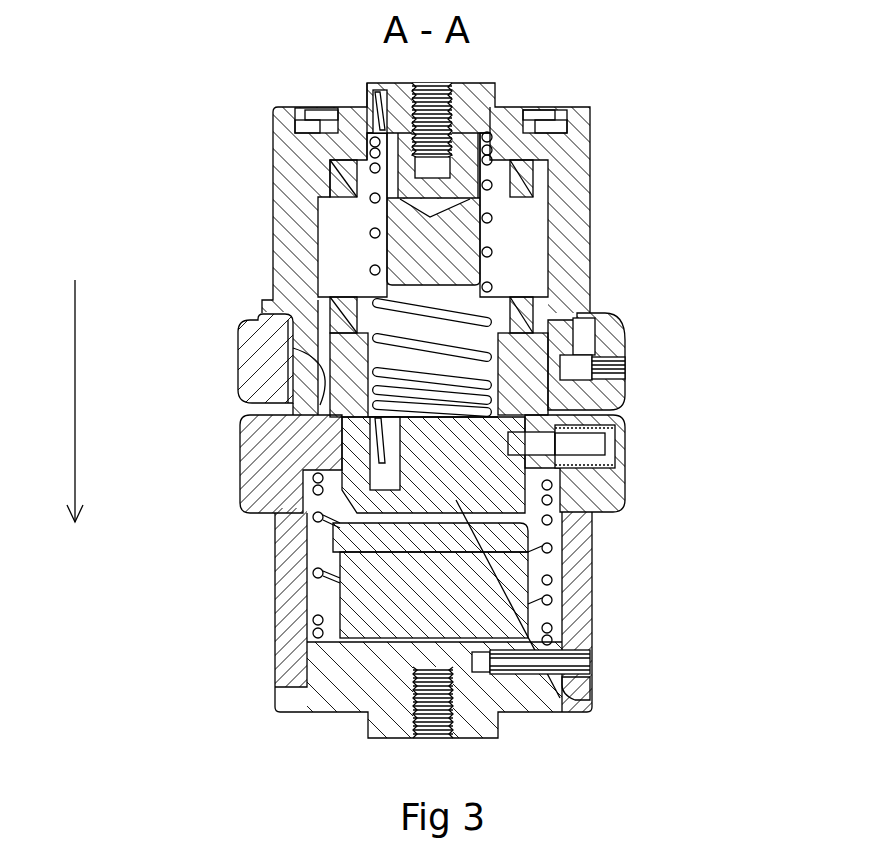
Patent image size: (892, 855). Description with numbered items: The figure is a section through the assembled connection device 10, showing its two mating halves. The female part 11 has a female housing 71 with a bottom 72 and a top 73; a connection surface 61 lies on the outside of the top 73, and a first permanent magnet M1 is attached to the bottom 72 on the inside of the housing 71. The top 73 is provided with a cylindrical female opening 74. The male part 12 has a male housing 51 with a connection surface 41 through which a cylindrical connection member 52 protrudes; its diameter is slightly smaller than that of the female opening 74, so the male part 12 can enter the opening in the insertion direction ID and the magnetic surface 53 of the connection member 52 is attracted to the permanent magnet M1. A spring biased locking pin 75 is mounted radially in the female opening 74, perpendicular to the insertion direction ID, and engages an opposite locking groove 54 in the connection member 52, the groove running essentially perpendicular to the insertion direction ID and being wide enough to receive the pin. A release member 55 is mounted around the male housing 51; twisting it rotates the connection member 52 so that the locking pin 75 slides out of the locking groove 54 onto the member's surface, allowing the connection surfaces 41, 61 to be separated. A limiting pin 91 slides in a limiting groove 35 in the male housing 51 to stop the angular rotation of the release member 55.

The connection device 10 is at (177, 190).
The female part 11 is at (258, 612).
The male part 12 is at (625, 163).
The limiting groove 35 is at (593, 303).
The connection surface 41 is at (593, 303).
The male housing 51 is at (577, 205).
The connection member 52 is at (480, 498).
The magnetic surface 53 is at (565, 700).
The locking groove 54 is at (517, 430).
The release member 55 is at (281, 349).
The connection surface 61 is at (288, 348).
The female housing 71 is at (577, 573).
The bottom 72 is at (355, 680).
The top 73 is at (302, 445).
The cylindrical female opening 74 is at (363, 426).
The spring biased locking pin 75 is at (545, 353).
The limiting pin 91 is at (600, 313).
The first permanent magnet M1 is at (393, 603).
The insertion direction ID is at (73, 437).